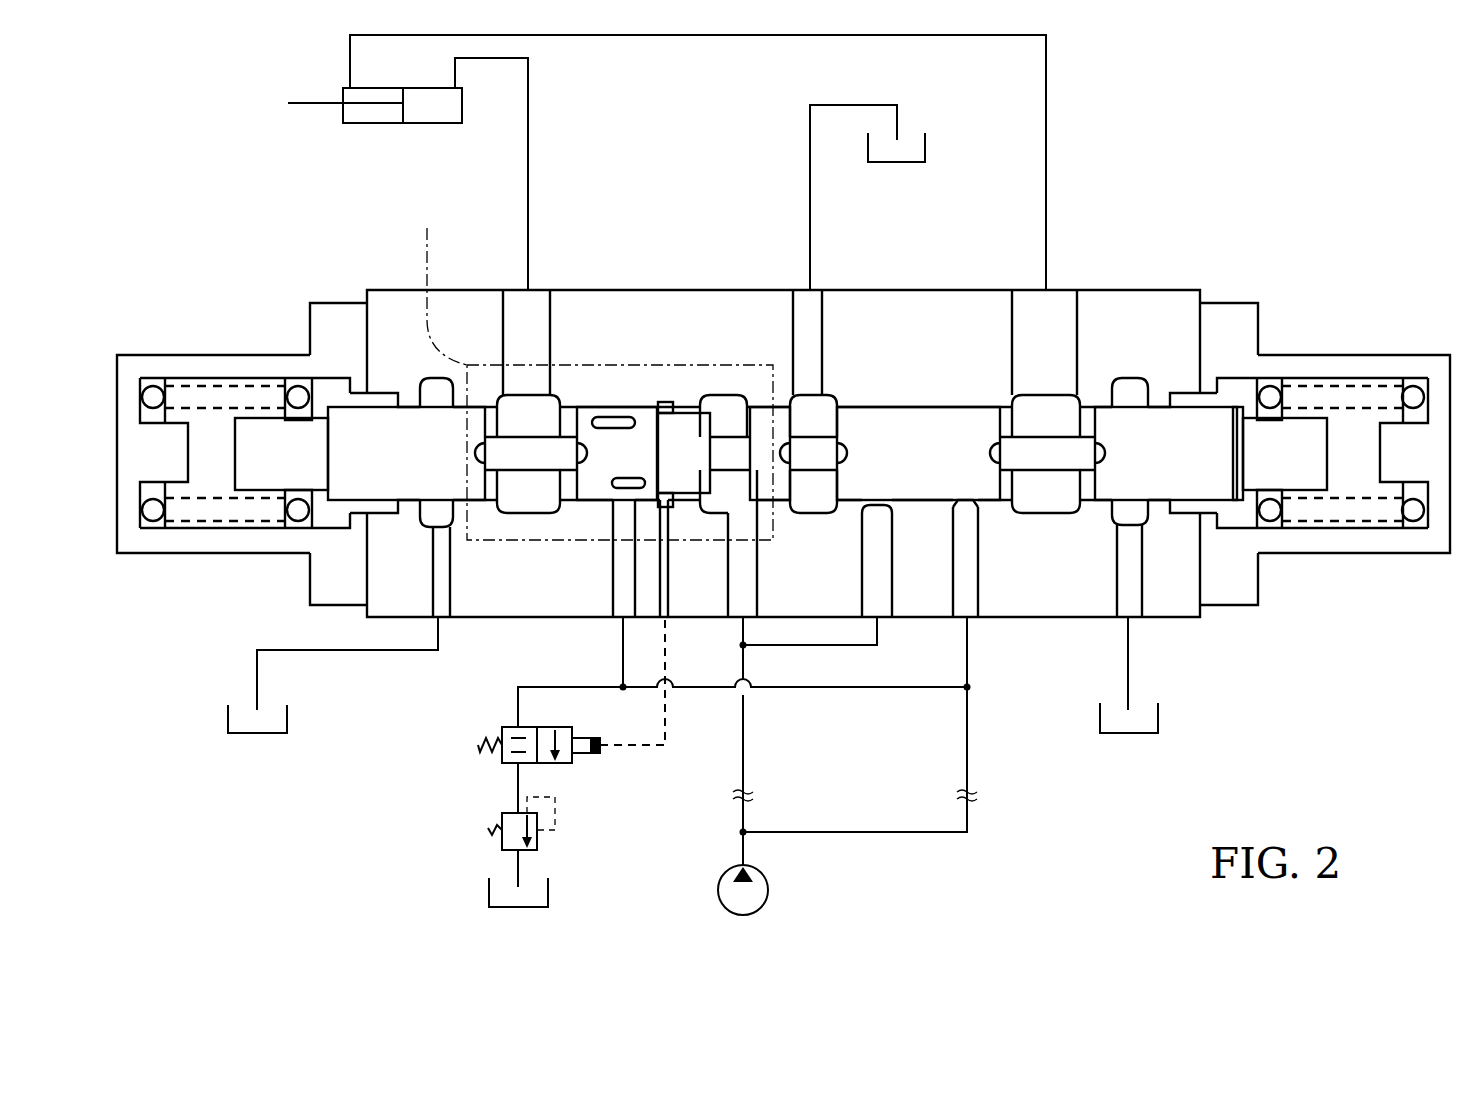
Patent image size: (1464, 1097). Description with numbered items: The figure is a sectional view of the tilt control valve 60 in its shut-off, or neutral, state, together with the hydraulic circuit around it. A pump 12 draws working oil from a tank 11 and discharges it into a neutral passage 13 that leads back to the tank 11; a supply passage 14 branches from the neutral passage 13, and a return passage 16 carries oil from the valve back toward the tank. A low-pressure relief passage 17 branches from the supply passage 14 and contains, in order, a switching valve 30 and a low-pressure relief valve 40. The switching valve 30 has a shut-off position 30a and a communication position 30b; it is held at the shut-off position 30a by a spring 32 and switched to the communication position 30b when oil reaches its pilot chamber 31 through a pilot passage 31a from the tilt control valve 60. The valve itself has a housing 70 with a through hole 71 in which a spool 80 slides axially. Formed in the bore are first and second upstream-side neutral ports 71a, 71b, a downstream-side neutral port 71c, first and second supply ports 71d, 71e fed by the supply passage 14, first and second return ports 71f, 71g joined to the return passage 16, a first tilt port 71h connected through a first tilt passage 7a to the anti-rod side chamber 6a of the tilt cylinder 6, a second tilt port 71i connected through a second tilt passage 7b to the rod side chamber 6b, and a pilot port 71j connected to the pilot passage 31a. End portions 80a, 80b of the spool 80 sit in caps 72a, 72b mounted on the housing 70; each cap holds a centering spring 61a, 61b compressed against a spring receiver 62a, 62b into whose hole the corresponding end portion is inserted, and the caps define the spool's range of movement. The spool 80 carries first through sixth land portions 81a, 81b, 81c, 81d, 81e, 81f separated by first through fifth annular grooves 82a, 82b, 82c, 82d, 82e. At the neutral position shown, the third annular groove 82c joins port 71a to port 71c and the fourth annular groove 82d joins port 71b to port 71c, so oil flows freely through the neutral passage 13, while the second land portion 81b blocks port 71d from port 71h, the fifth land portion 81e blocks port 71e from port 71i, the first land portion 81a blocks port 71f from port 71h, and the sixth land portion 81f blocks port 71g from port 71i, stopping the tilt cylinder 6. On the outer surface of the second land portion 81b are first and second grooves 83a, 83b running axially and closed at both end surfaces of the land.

The tilt cylinder 6 is at (375, 70).
The anti-rod side chamber 6a is at (420, 102).
The rod side chamber 6b is at (368, 102).
The first tilt passage 7a is at (531, 80).
The second tilt passage 7b is at (1049, 80).
The tank 11 is at (930, 158).
The pump 12 is at (718, 890).
The neutral passage 13 is at (808, 170).
The supply passage 14 is at (968, 808).
The return passage 16 is at (255, 656).
The low-pressure relief passage 17 is at (531, 686).
The switching valve 30 is at (540, 723).
The shut-off position 30a is at (505, 765).
The communication position 30b is at (565, 727).
The pilot chamber 31 is at (585, 756).
The pilot passage 31a is at (628, 748).
The spring 32 is at (478, 745).
The low-pressure relief valve 40 is at (500, 847).
The tilt control valve 60 is at (780, 423).
The centering spring 61a is at (223, 502).
The centering spring 61b is at (1340, 502).
The spring receiver 62a is at (325, 512).
The spring receiver 62b is at (1235, 512).
The housing 70 is at (395, 560).
The through hole 71 is at (398, 478).
The first upstream-side neutral port 71a is at (757, 517).
The second upstream-side neutral port 71b is at (862, 522).
The downstream-side neutral port 71c is at (795, 393).
The first supply port 71d is at (623, 520).
The second supply port 71e is at (950, 512).
The first return port 71f is at (445, 528).
The second return port 71g is at (1117, 527).
The first tilt port 71h is at (497, 397).
The second tilt port 71i is at (1086, 397).
The pilot port 71j is at (668, 520).
The cap 72a is at (125, 545).
The cap 72b is at (1445, 545).
The spool 80 is at (814, 345).
The end portion 80a is at (262, 420).
The end portion 80b is at (1292, 443).
The first land portion 81a is at (405, 440).
The second land portion 81b is at (594, 342).
The third land portion 81c is at (692, 443).
The fourth land portion 81d is at (812, 443).
The fifth land portion 81e is at (940, 443).
The sixth land portion 81f is at (1155, 443).
The first annular groove 82a is at (500, 400).
The second annular groove 82b is at (668, 402).
The third annular groove 82c is at (723, 443).
The fourth annular groove 82d is at (830, 440).
The fifth annular groove 82e is at (1045, 437).
The first groove 83a is at (590, 420).
The second groove 83b is at (620, 478).